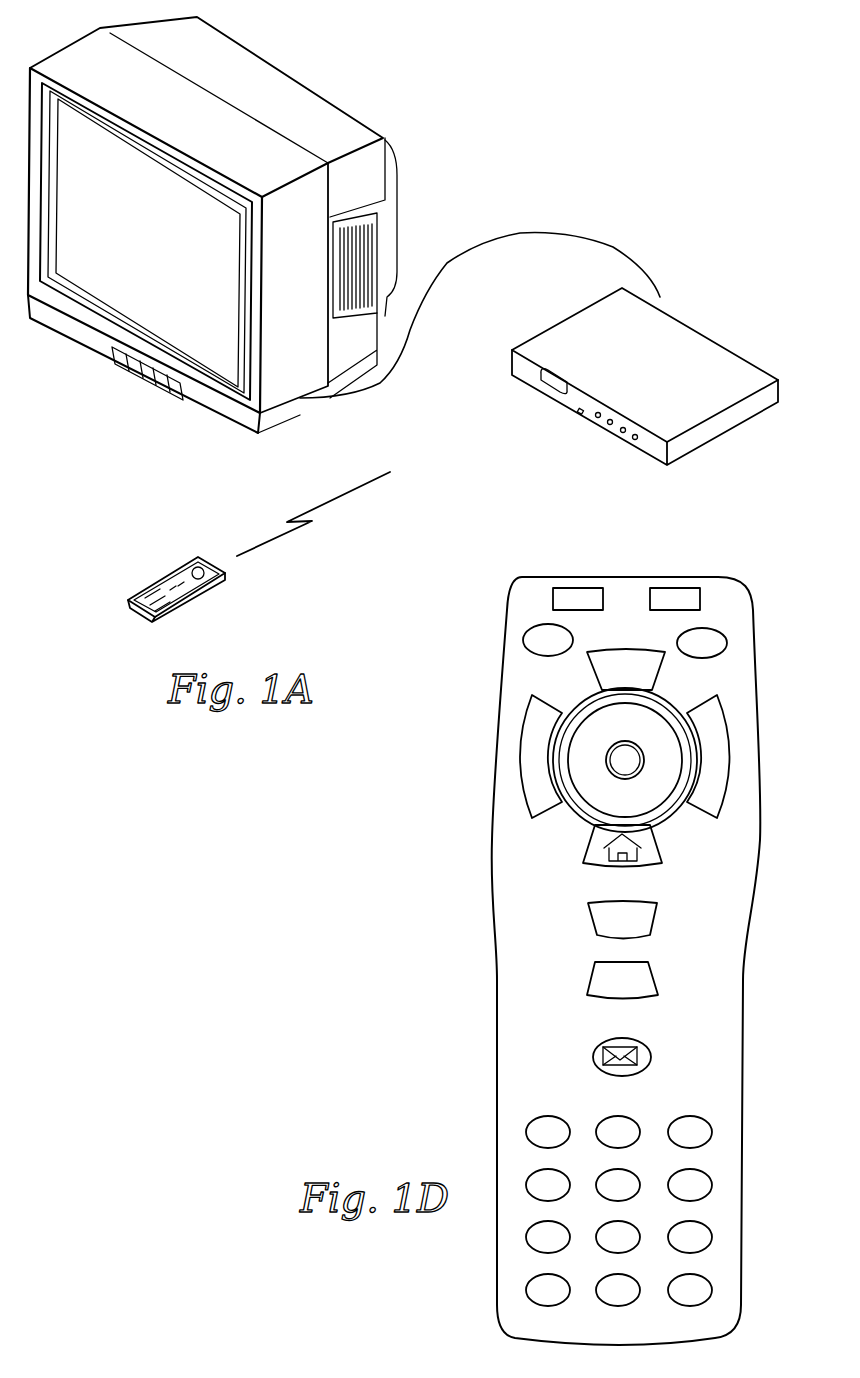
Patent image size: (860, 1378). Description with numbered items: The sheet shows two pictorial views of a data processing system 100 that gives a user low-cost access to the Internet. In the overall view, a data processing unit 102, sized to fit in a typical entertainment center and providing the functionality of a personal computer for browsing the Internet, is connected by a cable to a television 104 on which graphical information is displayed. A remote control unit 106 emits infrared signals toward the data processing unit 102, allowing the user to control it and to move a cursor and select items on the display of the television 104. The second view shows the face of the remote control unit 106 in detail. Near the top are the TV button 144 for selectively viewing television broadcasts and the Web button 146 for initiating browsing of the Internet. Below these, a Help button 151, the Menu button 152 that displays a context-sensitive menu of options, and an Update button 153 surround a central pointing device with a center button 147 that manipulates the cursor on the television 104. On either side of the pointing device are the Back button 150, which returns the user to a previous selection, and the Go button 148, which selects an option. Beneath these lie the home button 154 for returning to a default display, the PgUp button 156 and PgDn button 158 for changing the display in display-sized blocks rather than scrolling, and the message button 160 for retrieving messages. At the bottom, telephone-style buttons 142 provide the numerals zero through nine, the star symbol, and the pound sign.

In FIG. 1A, the data processing system 100 is at (510, 488).
In FIG. 1A, the data processing unit 102 is at (720, 338).
In FIG. 1A, the television 104 is at (342, 102).
In FIG. 1A, the remote control unit 106 is at (150, 583).
In FIG. 1D, the remote control unit 106 is at (745, 1087).
In FIG. 1D, the buttons 142 is at (750, 1108).
In FIG. 1D, the TV button 144 is at (574, 588).
In FIG. 1D, the Web button 146 is at (675, 588).
In FIG. 1D, the center select button 147 is at (632, 760).
In FIG. 1D, the Go button 148 is at (712, 818).
In FIG. 1D, the Back button 150 is at (543, 817).
In FIG. 1D, the Help button 151 is at (523, 640).
In FIG. 1D, the Menu button 152 is at (632, 650).
In FIG. 1D, the Update button 153 is at (728, 645).
In FIG. 1D, the home button 154 is at (652, 866).
In FIG. 1D, the PgUp button 156 is at (655, 921).
In FIG. 1D, the PgDn button 158 is at (640, 997).
In FIG. 1D, the message button 160 is at (650, 1058).